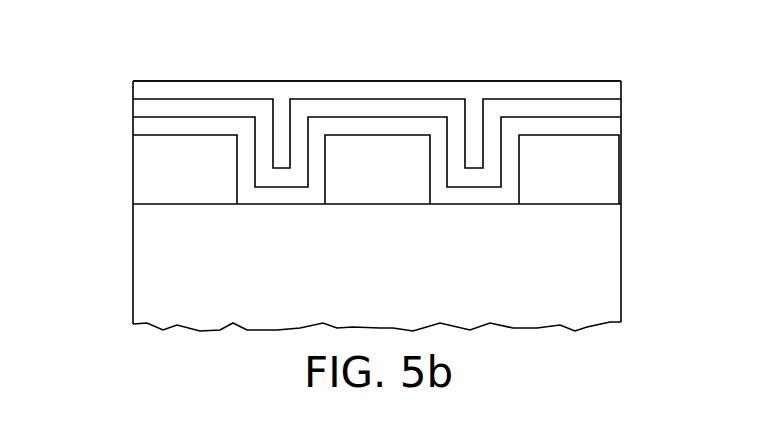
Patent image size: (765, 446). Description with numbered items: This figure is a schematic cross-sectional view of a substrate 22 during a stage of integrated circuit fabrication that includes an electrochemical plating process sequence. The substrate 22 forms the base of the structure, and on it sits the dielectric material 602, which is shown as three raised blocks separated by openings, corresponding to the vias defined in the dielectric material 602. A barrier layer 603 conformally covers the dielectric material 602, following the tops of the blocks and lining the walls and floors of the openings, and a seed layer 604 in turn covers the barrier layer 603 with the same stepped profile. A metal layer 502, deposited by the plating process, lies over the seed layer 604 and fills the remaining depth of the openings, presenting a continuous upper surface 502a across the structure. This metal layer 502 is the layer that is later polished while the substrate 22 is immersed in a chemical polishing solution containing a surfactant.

The metal layer 502 is at (138, 90).
The top surface of metal layer 502a is at (576, 89).
The seed layer 604 is at (137, 112).
The barrier layer 603 is at (143, 127).
The dielectric material 602 is at (201, 185).
The substrate 22 is at (389, 275).